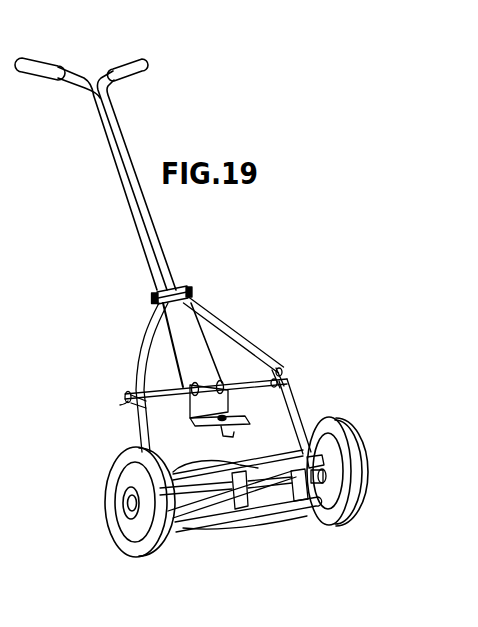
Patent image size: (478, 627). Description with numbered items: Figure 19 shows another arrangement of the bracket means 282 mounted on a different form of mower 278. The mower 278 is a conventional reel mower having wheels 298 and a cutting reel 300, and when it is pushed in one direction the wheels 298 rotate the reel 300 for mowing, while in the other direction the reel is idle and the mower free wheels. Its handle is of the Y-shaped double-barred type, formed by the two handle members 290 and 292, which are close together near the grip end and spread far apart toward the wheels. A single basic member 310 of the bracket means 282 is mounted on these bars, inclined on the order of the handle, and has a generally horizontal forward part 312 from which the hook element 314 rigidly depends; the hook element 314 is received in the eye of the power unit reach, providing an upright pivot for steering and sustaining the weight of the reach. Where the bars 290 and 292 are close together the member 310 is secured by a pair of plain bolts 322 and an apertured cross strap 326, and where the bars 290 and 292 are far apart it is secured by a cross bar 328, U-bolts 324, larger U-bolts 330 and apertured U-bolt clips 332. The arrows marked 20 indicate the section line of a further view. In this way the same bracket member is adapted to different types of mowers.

The reel mower 20 is at (186, 276).
The mower 278 is at (140, 238).
The bracket means 282 is at (226, 352).
The handle member 290 is at (138, 362).
The handle member 292 is at (222, 331).
The wheels 298 is at (138, 548).
The reel 300 is at (253, 521).
The basic member 310 is at (170, 325).
The forward part 312 is at (228, 419).
The hook element 314 is at (218, 434).
The plain bolts 322 is at (155, 296).
The U-bolts 324 is at (197, 385).
The cross strap 326 is at (190, 294).
The cross bar 328 is at (286, 382).
The U-bolts 330 is at (124, 404).
The U-bolt clips 332 is at (127, 390).